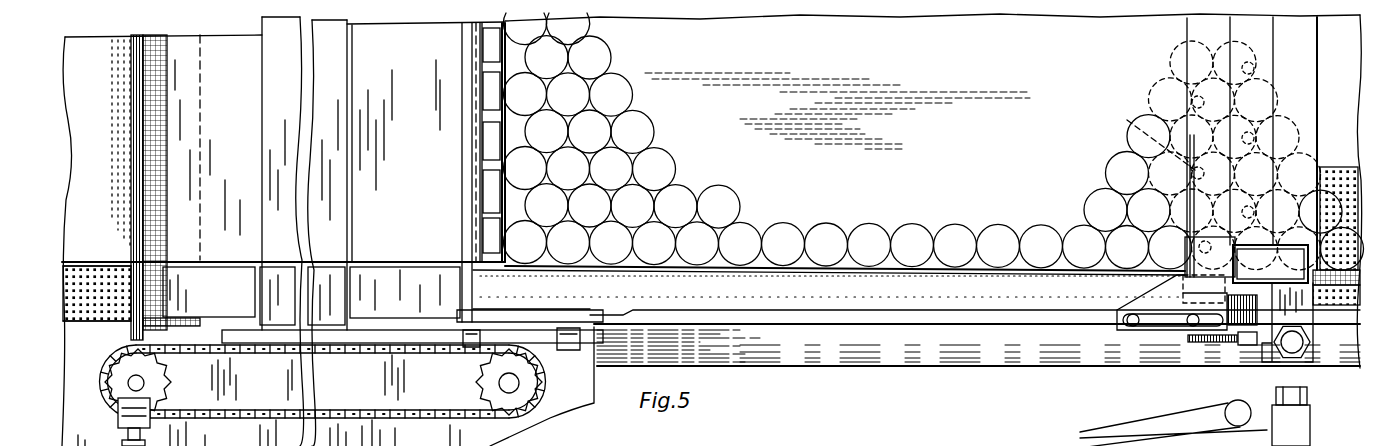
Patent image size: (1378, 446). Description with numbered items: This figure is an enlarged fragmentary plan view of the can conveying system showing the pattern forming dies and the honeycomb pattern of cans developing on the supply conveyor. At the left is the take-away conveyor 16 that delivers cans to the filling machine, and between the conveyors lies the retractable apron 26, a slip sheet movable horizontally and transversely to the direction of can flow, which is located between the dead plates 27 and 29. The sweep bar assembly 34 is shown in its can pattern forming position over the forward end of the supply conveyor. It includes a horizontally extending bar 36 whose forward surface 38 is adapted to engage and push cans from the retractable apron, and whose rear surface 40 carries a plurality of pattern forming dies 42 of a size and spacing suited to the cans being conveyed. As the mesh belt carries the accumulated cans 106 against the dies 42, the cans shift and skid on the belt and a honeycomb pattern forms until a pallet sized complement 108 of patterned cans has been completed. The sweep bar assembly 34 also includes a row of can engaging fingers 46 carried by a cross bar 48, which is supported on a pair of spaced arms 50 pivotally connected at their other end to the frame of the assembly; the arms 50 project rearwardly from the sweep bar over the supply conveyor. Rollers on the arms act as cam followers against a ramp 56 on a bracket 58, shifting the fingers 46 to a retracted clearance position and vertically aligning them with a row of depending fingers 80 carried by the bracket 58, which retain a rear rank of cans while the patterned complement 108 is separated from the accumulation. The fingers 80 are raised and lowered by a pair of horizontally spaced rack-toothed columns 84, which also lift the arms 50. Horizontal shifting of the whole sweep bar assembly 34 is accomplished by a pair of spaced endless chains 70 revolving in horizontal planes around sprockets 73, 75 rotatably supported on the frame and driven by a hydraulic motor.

The take-away conveyor 16 is at (80, 193).
The retractable apron 26 is at (318, 126).
The dead plate 27 is at (217, 205).
The dead plate 29 is at (420, 99).
The pattern forming dies 42 is at (515, 137).
The rear surface 40 is at (480, 156).
The horizontally extending bar 36 is at (482, 181).
The forward surface 38 is at (480, 211).
The stacked containers 106 is at (535, 33).
The complement of patterned cans 108 is at (962, 217).
The sweep bar assembly 34 is at (500, 270).
The spaced arms 50 is at (903, 316).
The endless chains 70 is at (360, 420).
The sprocket 75 is at (470, 392).
The sprocket 73 is at (118, 388).
The cross bar 48 is at (1190, 38).
The bracket 58 is at (1257, 37).
The can engaging fingers 46 is at (1185, 108).
The depending fingers 80 is at (1255, 205).
The ramp 56 is at (1207, 343).
The columns 84 is at (1310, 343).